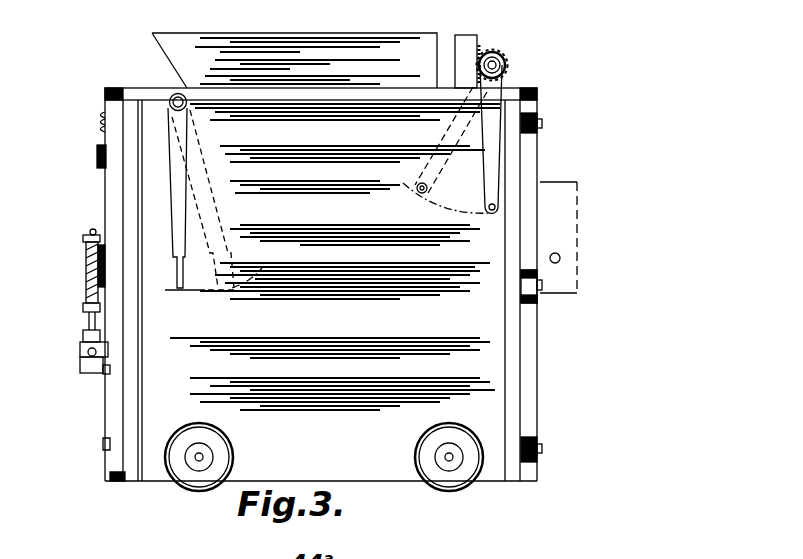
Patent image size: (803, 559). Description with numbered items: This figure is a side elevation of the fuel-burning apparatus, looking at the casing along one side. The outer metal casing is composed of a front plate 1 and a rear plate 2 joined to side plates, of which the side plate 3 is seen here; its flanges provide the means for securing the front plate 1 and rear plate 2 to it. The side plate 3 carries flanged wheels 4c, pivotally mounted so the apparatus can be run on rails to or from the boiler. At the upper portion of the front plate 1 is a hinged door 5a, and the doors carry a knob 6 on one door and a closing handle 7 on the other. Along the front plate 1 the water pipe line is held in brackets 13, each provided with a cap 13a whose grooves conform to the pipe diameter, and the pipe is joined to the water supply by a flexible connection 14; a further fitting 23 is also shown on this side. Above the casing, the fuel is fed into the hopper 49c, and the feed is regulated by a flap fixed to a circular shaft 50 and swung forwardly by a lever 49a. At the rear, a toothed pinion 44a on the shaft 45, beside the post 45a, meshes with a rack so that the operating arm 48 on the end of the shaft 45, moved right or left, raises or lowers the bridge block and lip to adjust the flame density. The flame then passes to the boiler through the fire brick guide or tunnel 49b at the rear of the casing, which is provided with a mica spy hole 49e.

The front plate 1 is at (112, 412).
The rear plate 2 is at (530, 368).
The side plate 3 is at (335, 257).
The flanged wheels 4c is at (197, 477).
The door 5a is at (102, 163).
The knob 6 is at (92, 229).
The closing handle 7 is at (100, 243).
The brackets 13 is at (80, 354).
The cap 13a is at (84, 343).
The flexible connection 14 is at (88, 273).
The lug 23 is at (94, 366).
The toothed pinion 44a is at (507, 68).
The shaft 45 is at (505, 55).
The ratchet post 45a is at (463, 47).
The operating arm 48 is at (495, 167).
The lever 49a is at (182, 217).
The fire brick guide or tunnel 49b is at (562, 283).
The hopper 49c is at (300, 33).
The spy hole 49e is at (562, 257).
The circular shaft 50 is at (173, 93).